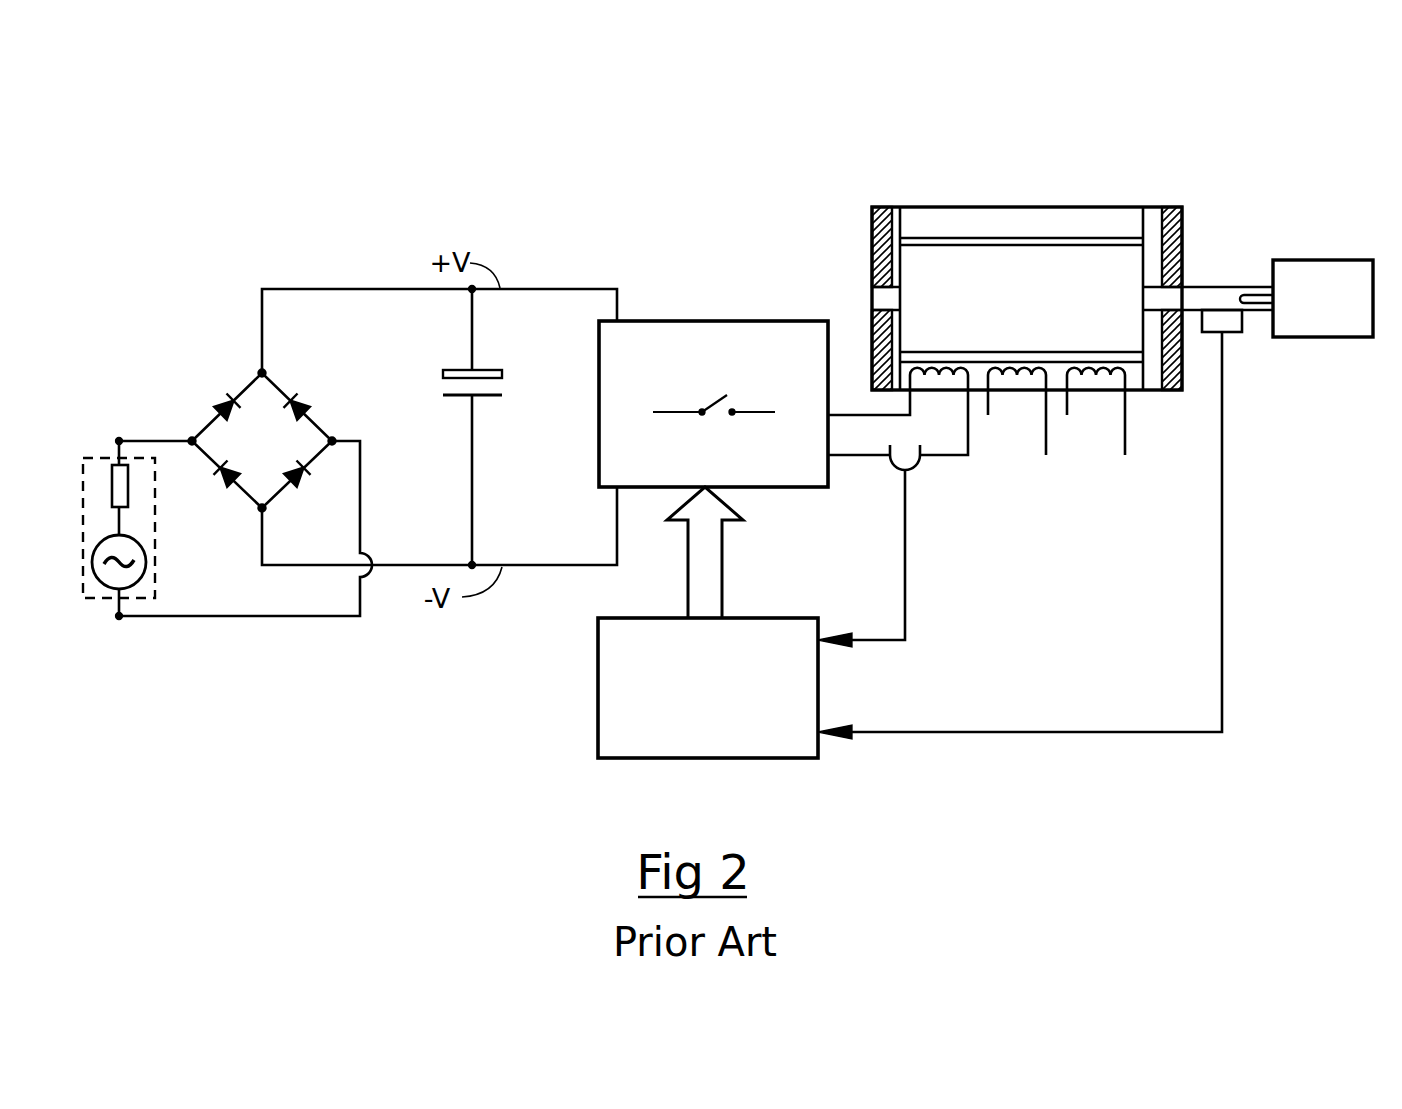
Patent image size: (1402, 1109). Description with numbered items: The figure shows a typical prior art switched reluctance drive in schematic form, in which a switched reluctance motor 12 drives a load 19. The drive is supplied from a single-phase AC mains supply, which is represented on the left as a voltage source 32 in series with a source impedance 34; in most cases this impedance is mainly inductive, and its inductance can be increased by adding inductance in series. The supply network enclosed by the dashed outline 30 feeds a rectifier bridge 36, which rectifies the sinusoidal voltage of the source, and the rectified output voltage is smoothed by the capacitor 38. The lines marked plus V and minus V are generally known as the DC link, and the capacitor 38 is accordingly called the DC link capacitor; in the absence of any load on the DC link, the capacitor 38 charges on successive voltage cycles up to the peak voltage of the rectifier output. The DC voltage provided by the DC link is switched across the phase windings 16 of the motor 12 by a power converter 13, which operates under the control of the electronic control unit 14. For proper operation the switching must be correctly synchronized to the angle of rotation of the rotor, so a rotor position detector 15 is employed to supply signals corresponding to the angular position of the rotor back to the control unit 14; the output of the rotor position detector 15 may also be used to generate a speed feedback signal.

The switched reluctance motor 12 is at (983, 205).
The power converter 13 is at (650, 313).
The electronic control unit 14 is at (590, 640).
The rotor position detector 15 is at (1220, 323).
The phase windings 16 is at (1102, 368).
The load 19 is at (1290, 270).
The AC mains supply 30 is at (83, 602).
The voltage source 32 is at (140, 573).
The source impedance 34 is at (108, 483).
The rectifier bridge 36 is at (228, 437).
The capacitor 38 is at (452, 368).